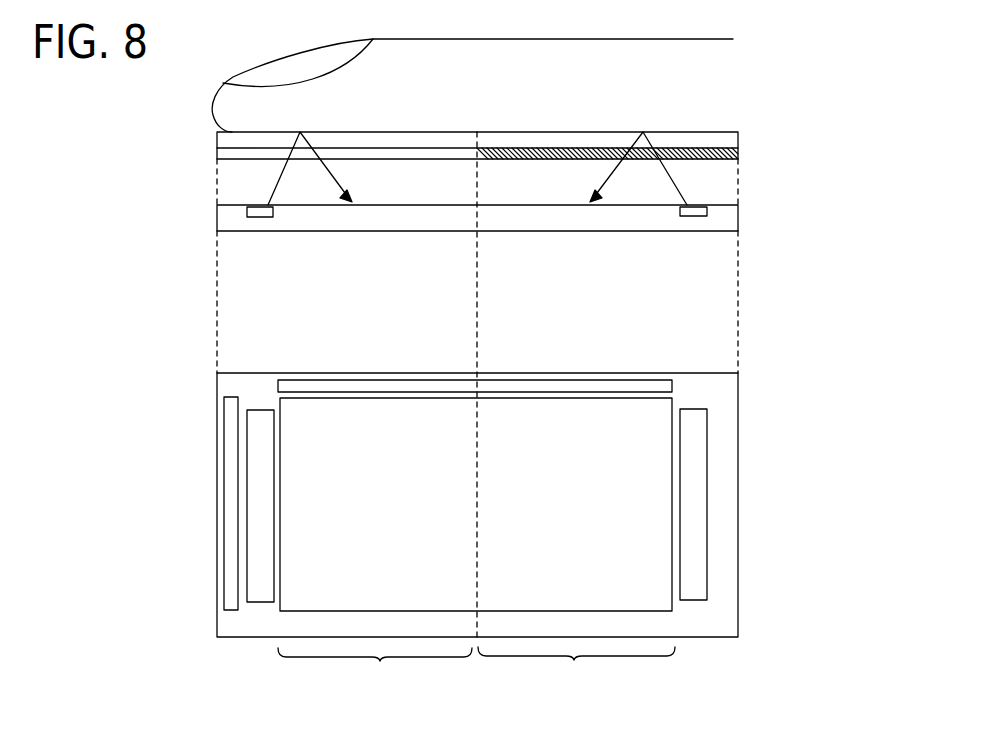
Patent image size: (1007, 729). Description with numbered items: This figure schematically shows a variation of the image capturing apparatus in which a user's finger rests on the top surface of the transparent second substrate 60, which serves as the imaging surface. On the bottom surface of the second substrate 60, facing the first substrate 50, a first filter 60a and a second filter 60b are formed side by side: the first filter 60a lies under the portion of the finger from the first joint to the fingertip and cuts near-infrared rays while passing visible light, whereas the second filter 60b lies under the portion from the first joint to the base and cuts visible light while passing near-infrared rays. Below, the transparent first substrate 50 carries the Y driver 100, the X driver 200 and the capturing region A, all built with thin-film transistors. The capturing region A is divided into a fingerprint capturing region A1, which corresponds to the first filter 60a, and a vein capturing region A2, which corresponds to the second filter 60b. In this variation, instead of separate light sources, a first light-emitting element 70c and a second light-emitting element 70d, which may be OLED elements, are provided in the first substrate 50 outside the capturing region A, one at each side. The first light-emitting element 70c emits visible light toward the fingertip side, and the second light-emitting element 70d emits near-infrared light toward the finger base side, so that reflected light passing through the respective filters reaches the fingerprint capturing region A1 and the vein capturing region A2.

The second substrate 60 is at (483, 139).
The first filter 60a is at (218, 152).
The second filter 60b is at (738, 155).
The first light-emitting element 70c is at (250, 212).
The second light-emitting element 70d is at (707, 211).
The first substrate 50 is at (710, 227).
The Y driver 100 is at (228, 508).
The X driver 200 is at (573, 387).
The capturing region A is at (659, 603).
The fingerprint capturing region A1 is at (375, 669).
The vein capturing region A2 is at (576, 669).